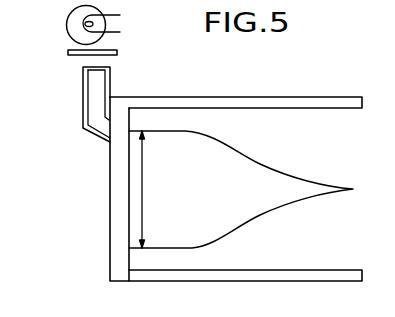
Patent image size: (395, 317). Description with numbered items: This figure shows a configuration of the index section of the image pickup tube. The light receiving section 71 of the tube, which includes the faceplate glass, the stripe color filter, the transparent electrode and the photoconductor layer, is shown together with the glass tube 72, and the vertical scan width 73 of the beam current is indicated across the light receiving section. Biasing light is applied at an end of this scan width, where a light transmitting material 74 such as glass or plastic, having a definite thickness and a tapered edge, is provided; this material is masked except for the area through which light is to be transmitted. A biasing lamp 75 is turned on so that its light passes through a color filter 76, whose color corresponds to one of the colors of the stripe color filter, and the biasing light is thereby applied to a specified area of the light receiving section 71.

The light receiving section 71 is at (117, 257).
The glass tube 72 is at (310, 103).
The vertical scan width of the beam current 73 is at (145, 188).
The light transmitting material 74 is at (95, 91).
The biasing lamp 75 is at (71, 10).
The color filter 76 is at (118, 54).